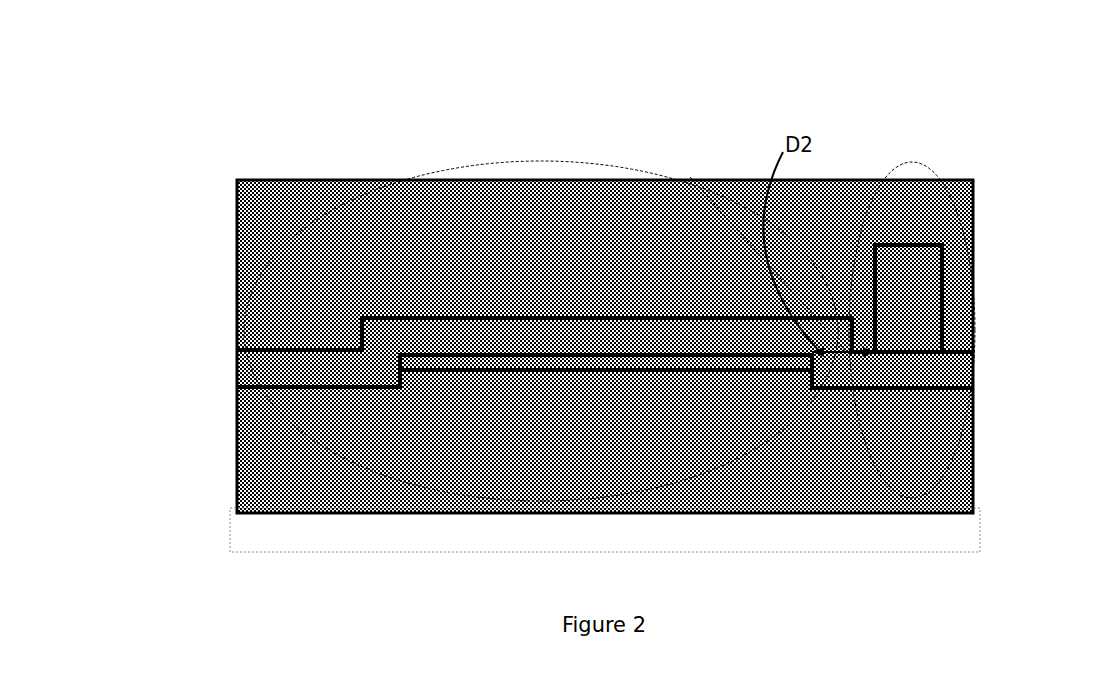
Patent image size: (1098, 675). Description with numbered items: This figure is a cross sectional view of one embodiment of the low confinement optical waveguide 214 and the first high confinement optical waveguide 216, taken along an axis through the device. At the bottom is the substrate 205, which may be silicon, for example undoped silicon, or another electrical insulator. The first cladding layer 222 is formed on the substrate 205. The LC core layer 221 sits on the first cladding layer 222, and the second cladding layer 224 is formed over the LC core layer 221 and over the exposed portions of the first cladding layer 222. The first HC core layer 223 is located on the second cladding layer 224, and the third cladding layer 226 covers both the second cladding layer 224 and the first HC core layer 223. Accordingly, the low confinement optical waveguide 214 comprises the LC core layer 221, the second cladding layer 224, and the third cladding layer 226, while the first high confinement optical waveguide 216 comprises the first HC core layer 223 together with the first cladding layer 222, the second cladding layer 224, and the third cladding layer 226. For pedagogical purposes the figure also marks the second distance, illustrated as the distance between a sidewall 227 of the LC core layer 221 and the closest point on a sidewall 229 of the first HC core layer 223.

The substrate 205 is at (676, 542).
The low confinement optical waveguide 214 is at (253, 293).
The first high confinement optical waveguide 216 is at (913, 162).
The LC core layer 221 is at (485, 355).
The first cladding layer 222 is at (657, 436).
The first HC core layer 223 is at (887, 262).
The second cladding layer 224 is at (297, 365).
The third cladding layer 226 is at (755, 288).
The sidewall of the LC core layer 227 is at (812, 362).
The sidewall of the first HC core layer 229 is at (875, 315).